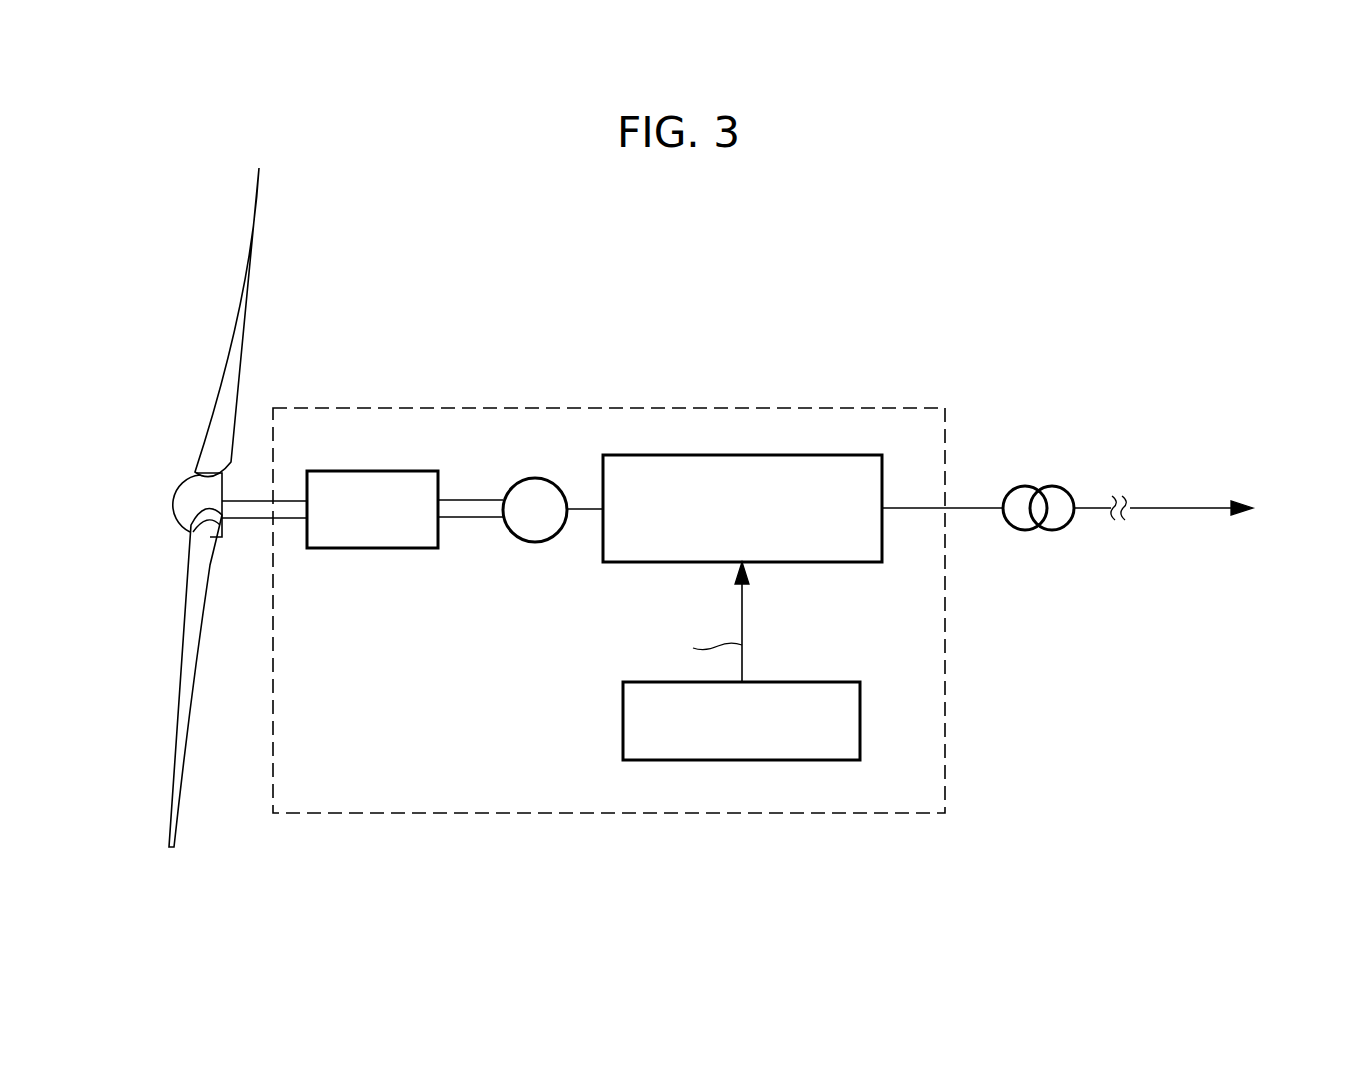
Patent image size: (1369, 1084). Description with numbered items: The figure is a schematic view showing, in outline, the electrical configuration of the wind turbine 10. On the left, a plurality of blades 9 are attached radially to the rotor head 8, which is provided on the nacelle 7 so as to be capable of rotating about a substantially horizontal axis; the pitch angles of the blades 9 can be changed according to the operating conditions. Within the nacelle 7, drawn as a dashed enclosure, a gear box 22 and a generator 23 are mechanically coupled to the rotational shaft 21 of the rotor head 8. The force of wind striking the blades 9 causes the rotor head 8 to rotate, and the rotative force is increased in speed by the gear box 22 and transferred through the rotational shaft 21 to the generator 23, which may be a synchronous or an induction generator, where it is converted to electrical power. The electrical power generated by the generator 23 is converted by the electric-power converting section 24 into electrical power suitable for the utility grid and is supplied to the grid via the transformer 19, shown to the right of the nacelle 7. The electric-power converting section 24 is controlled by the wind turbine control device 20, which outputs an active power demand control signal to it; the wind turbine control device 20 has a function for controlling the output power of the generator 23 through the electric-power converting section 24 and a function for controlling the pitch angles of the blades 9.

The nacelle 7 is at (520, 408).
The rotor head 8 is at (168, 502).
The blades 9 is at (250, 269).
The wind turbine 10 is at (662, 330).
The transformer 19 is at (1023, 485).
The wind turbine control device 20 is at (623, 727).
The rotational shaft 21 is at (248, 518).
The gear box 22 is at (375, 550).
The generator 23 is at (537, 543).
The electric-power converting section 24 is at (785, 563).